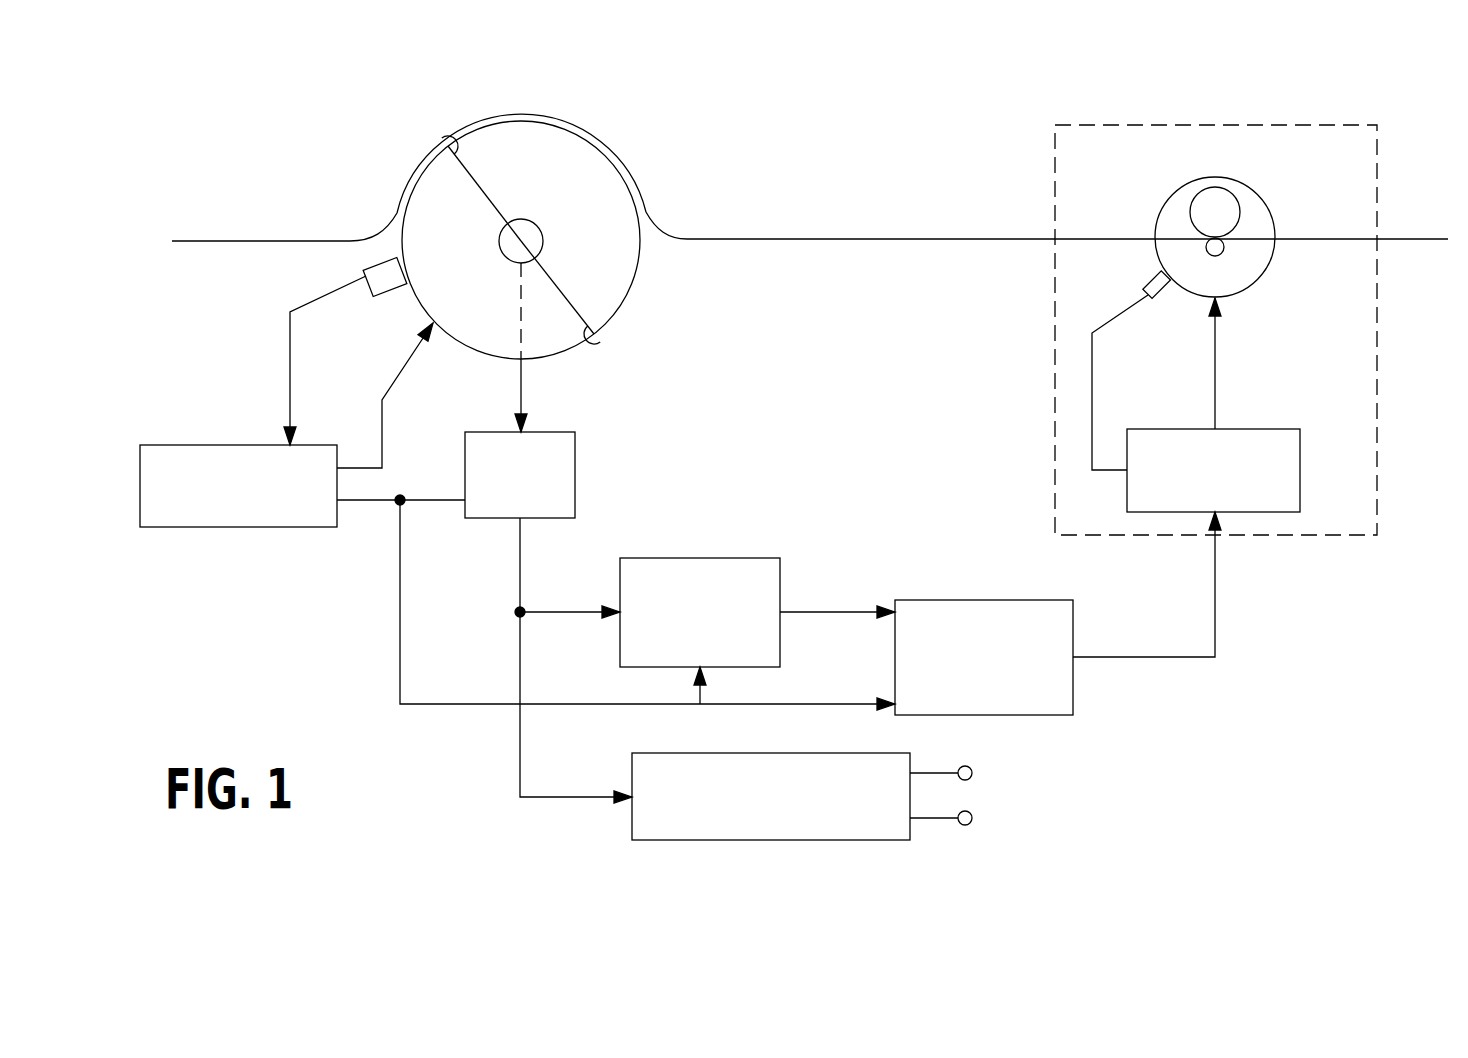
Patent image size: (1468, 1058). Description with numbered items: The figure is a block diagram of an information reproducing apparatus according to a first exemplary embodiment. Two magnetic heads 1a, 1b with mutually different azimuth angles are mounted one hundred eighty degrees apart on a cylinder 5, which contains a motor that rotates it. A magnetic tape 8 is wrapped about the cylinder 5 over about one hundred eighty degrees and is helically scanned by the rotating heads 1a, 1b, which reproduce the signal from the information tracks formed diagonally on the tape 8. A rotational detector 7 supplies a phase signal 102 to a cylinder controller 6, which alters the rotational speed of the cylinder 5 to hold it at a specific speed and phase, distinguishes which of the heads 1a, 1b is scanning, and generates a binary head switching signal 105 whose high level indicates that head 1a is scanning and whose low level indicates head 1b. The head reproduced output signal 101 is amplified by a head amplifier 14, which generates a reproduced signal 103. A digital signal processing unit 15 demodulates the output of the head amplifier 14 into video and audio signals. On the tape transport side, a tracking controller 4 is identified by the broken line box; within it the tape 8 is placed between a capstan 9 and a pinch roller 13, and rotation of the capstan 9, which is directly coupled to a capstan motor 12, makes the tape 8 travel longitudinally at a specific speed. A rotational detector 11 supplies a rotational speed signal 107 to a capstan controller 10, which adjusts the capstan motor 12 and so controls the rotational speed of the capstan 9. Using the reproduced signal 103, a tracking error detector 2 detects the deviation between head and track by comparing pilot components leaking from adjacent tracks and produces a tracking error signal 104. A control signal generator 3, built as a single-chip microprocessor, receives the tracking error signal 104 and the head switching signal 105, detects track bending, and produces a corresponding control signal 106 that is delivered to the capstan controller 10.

The magnetic head 1a is at (605, 330).
The magnetic head 1b is at (445, 143).
The tracking error detector 2 is at (690, 558).
The control signal generator 3 is at (910, 600).
The tracking controller 4 is at (1377, 458).
The cylinder 5 is at (572, 160).
The cylinder controller 6 is at (235, 445).
The rotational detector 7 is at (382, 297).
The magnetic tape 8 is at (717, 239).
The capstan 9 is at (1224, 250).
The capstan controller 10 is at (1227, 429).
The rotational detector 11 is at (1146, 284).
The capstan motor 12 is at (1275, 212).
The pinch roller 13 is at (1240, 200).
The head amplifier 14 is at (575, 480).
The digital signal processing unit 15 is at (737, 753).
The head reproduced output signal 101 is at (521, 377).
The phase signal 102 is at (290, 343).
The reproduced signal 103 is at (520, 570).
The tracking error signal 104 is at (815, 611).
The HSW signal 105 is at (753, 706).
The control signal 106 is at (1215, 560).
The rotational speed signal 107 is at (1091, 374).